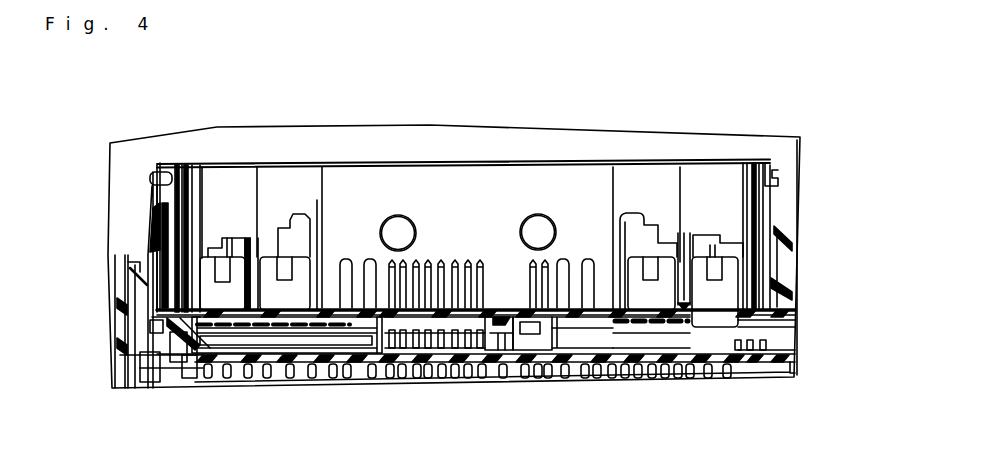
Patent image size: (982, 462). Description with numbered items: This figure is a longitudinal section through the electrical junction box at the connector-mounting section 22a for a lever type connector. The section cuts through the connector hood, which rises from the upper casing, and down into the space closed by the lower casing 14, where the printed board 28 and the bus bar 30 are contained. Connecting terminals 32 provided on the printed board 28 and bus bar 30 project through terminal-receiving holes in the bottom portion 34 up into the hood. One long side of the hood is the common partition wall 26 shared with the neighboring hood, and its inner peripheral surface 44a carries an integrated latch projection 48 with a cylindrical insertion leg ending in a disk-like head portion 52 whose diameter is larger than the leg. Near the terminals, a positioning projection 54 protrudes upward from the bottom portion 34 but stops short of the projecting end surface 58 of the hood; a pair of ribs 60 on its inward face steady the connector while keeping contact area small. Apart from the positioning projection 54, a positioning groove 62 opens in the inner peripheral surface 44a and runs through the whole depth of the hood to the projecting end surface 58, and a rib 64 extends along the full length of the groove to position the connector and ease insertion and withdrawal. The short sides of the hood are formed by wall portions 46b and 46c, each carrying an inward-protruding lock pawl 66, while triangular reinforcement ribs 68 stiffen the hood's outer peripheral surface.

The lower casing 14 is at (122, 285).
The connector-mounting section 22a is at (767, 134).
The partition wall 26 is at (579, 160).
The printed board 28 is at (520, 357).
The bus bar 30 is at (617, 317).
The connecting terminals 32 is at (472, 260).
The bottom portion 34 is at (435, 313).
The inner peripheral surface 44a is at (460, 177).
The wall portion 46b is at (777, 218).
The wall portion 46c is at (150, 222).
The latch projection 48 is at (384, 207).
The head portion 52 is at (395, 225).
The positioning projection 54 is at (243, 247).
The projecting end surface 58 is at (318, 162).
The ribs 60 is at (235, 247).
The positioning groove 62 is at (177, 220).
The rib 64 is at (183, 205).
The lock pawl 66 is at (163, 185).
The reinforcement ribs 68 is at (155, 220).